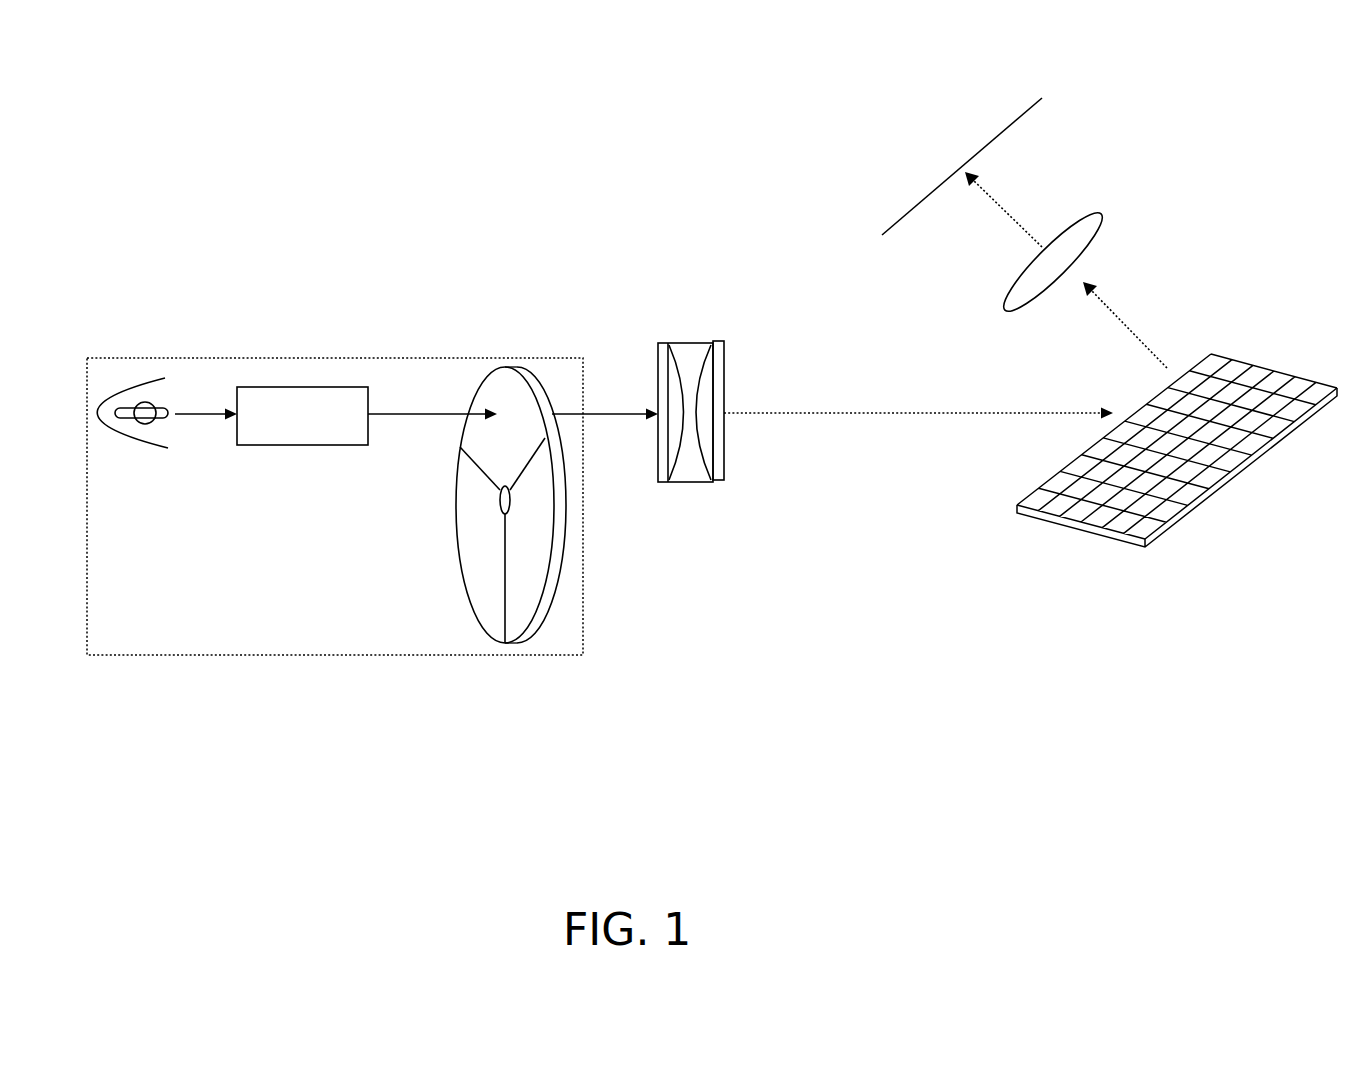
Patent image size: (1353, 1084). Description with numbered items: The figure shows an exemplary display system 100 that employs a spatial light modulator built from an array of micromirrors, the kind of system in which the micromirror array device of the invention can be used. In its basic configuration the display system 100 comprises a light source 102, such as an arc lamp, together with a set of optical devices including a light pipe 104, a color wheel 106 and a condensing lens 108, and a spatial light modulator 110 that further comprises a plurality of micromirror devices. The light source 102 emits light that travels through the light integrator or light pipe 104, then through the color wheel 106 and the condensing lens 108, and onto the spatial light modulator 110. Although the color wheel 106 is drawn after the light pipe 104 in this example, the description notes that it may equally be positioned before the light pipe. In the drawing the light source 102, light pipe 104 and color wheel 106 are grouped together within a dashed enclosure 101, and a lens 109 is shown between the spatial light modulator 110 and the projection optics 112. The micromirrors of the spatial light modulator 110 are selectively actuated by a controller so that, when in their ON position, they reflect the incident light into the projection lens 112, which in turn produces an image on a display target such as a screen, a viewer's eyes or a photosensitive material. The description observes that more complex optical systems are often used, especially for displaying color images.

The display system 100 is at (518, 218).
The light source housing 101 is at (337, 655).
The light source 102 is at (131, 368).
The light pipe 104 is at (305, 387).
The color wheel 106 is at (518, 365).
The condensing lens 108 is at (692, 335).
The collection lens 109 is at (1090, 213).
The spatial light modulator 110 is at (1233, 345).
The projection lens 112 is at (1018, 117).